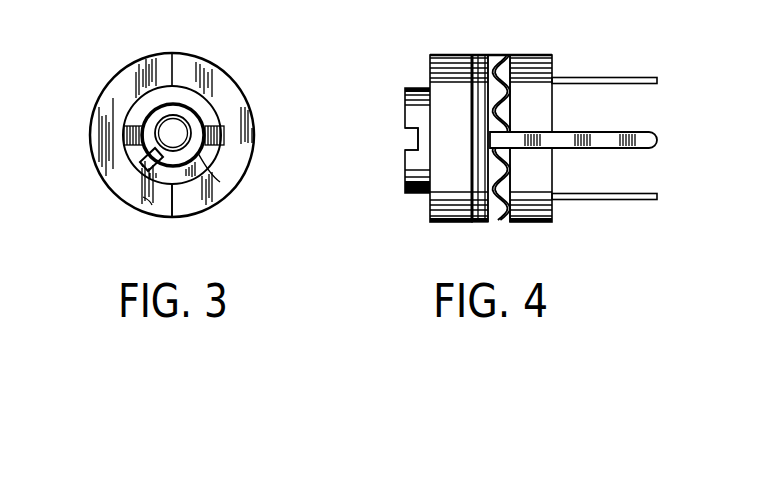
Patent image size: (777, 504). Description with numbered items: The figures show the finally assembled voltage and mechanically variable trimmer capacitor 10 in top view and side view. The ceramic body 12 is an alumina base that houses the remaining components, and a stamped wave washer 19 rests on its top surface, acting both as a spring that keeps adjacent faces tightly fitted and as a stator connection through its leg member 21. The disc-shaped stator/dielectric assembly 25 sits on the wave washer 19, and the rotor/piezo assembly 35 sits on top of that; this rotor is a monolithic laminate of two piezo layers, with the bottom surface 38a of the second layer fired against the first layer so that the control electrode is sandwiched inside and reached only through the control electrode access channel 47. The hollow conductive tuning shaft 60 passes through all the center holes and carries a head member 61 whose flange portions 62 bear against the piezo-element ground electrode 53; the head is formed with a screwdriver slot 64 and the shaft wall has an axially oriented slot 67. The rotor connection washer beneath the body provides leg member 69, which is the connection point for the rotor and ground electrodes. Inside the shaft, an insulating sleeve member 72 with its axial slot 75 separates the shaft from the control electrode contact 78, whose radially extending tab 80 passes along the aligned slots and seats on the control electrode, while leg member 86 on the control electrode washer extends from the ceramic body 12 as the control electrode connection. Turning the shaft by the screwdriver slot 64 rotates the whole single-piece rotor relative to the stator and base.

In FIG. 3, the voltage and mechanically variable trimmer capacitor 10 is at (212, 35).
In FIG. 4, the voltage and mechanically variable trimmer capacitor 10 is at (472, 32).
In FIG. 4, the ceramic body 12 is at (533, 226).
In FIG. 4, the stamped wave washer 19 is at (495, 55).
In FIG. 4, the leg member 21 is at (602, 130).
In FIG. 4, the stator/dielectric assembly 25 is at (480, 225).
In FIG. 3, the rotor/piezo assembly 35 is at (220, 60).
In FIG. 4, the rotor/piezo assembly 35 is at (465, 225).
In FIG. 3, the bottom surface of second layer 38a is at (195, 208).
In FIG. 3, the control electrode access channel 47 is at (117, 192).
In FIG. 3, the piezo-element ground electrode 53 is at (110, 97).
In FIG. 3, the tuning shaft 60 is at (208, 110).
In FIG. 4, the head member 61 is at (415, 80).
In FIG. 3, the flange portions 62 is at (155, 85).
In FIG. 3, the screwdriver slot 64 is at (222, 136).
In FIG. 4, the screwdriver slot 64 is at (410, 133).
In FIG. 3, the axially oriented slot 67 is at (143, 197).
In FIG. 4, the leg member 69 is at (613, 200).
In FIG. 3, the sleeve member 72 is at (193, 143).
In FIG. 3, the axial slot 75 is at (153, 150).
In FIG. 3, the control electrode contact 78 is at (220, 182).
In FIG. 3, the radially extending tab 80 is at (144, 167).
In FIG. 4, the leg member 86 is at (605, 77).